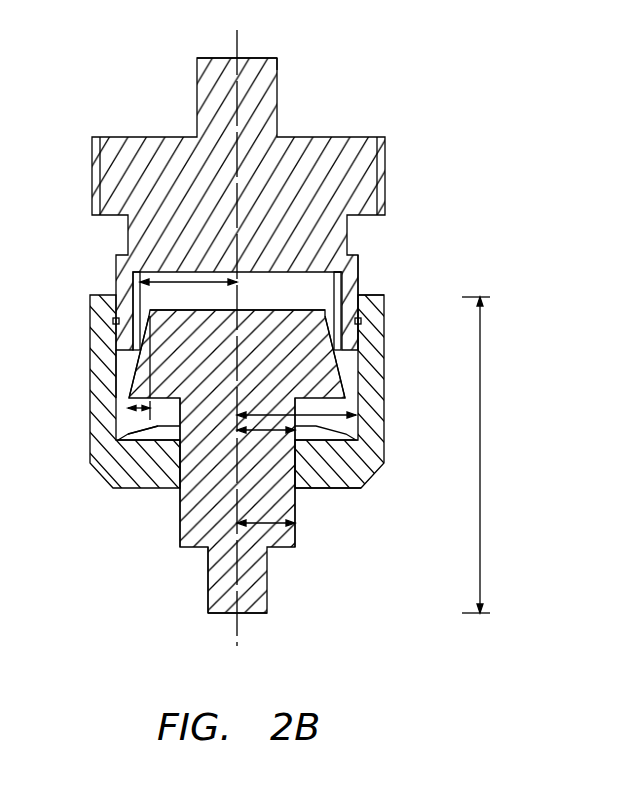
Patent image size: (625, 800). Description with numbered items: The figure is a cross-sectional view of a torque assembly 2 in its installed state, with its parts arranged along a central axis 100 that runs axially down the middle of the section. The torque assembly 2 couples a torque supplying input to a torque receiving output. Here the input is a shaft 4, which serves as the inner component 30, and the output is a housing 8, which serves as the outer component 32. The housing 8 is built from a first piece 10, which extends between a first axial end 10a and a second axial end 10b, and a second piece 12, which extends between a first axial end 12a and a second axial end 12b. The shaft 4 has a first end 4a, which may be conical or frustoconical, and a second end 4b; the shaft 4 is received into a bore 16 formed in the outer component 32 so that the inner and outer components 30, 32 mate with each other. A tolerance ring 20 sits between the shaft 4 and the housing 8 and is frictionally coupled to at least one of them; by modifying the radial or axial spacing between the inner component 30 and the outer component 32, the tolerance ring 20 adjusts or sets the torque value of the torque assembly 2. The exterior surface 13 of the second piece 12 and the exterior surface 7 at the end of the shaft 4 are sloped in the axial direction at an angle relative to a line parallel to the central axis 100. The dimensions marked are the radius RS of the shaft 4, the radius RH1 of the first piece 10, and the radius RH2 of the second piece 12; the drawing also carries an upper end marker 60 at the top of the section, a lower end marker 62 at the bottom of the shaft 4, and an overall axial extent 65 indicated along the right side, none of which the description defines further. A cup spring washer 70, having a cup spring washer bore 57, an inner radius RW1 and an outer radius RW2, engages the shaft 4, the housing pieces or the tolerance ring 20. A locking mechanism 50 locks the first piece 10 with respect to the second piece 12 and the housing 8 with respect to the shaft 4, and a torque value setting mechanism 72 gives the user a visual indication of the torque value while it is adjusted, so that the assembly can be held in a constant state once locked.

The torque assembly 2 is at (378, 58).
The shaft 4 is at (345, 386).
The first end 4a is at (340, 300).
The second end 4b is at (268, 613).
The exterior surface 7 is at (128, 426).
The housing 8 is at (408, 183).
The first piece 10 is at (385, 462).
The first axial end 10a is at (385, 297).
The second axial end 10b is at (360, 490).
The second piece 12 is at (387, 142).
The first axial end 12a is at (360, 353).
The second axial end 12b is at (277, 59).
The exterior surface 13 is at (345, 278).
The bore 16 is at (132, 388).
The tolerance ring 20 is at (132, 338).
The inner component 30 is at (179, 517).
The outer component 32 is at (92, 203).
The locking mechanism 50 is at (112, 321).
The cup spring washer bore 57 is at (310, 440).
The top end 60 is at (248, 58).
The bottom end 62 is at (206, 613).
The overall height 65 is at (478, 568).
The cup spring washer 70 is at (122, 442).
The torque value setting mechanism 72 is at (114, 364).
The central axis 100 is at (238, 646).
The radius of the second piece RH2 is at (133, 290).
The radius of the first piece RH1 is at (355, 440).
The outer radius of the cup spring washer RW2 is at (128, 430).
The inner radius of the cup spring washer RW1 is at (298, 500).
The radius of the shaft RS is at (270, 530).